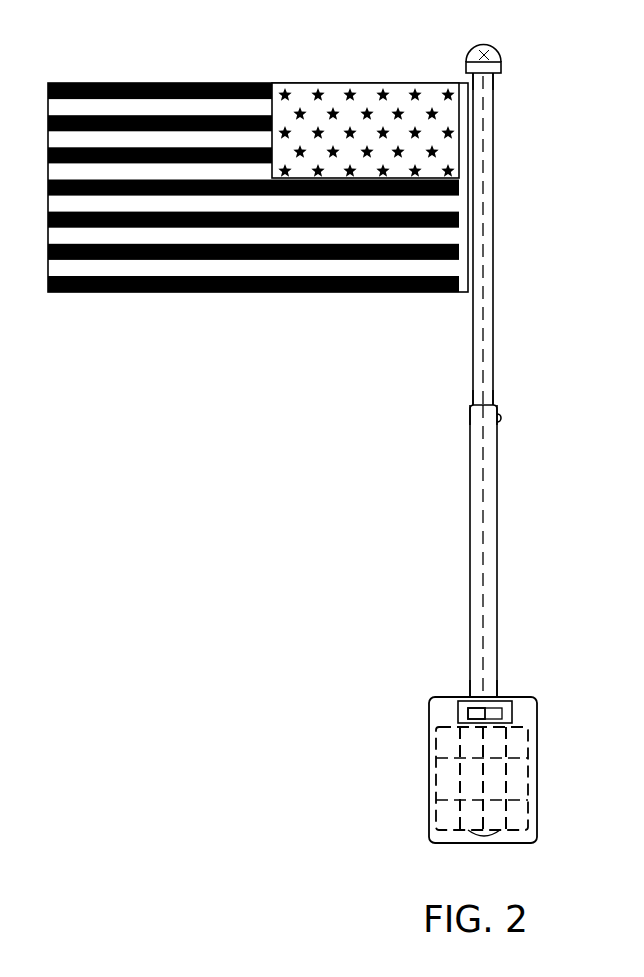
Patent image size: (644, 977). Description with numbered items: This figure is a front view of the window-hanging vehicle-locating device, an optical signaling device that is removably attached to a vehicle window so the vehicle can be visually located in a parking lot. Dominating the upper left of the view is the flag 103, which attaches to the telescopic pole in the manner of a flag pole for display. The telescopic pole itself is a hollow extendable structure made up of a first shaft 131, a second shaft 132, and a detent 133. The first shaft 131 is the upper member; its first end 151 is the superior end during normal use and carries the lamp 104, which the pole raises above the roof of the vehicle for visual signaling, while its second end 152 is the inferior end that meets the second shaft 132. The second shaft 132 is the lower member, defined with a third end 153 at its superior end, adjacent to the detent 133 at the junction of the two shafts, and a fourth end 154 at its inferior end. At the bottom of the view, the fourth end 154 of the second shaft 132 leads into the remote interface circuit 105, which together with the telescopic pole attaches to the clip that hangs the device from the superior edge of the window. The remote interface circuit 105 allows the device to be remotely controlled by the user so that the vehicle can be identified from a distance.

The flag 103 is at (217, 83).
The lamp 104 is at (480, 52).
The remote interface circuit 105 is at (518, 788).
The first shaft 131 is at (493, 237).
The second shaft 132 is at (498, 560).
The detent 133 is at (502, 420).
The first end 151 is at (488, 80).
The second end 152 is at (473, 404).
The third end 153 is at (470, 420).
The fourth end 154 is at (498, 680).